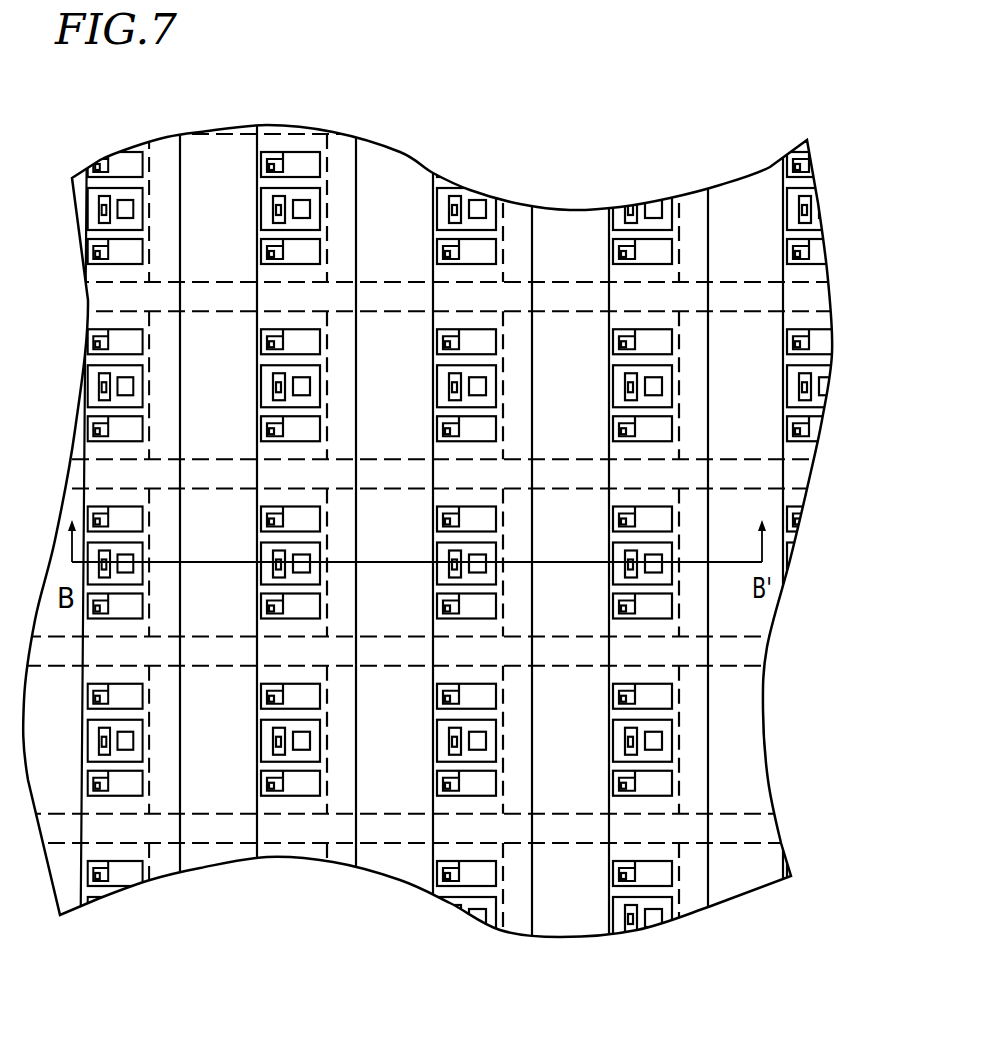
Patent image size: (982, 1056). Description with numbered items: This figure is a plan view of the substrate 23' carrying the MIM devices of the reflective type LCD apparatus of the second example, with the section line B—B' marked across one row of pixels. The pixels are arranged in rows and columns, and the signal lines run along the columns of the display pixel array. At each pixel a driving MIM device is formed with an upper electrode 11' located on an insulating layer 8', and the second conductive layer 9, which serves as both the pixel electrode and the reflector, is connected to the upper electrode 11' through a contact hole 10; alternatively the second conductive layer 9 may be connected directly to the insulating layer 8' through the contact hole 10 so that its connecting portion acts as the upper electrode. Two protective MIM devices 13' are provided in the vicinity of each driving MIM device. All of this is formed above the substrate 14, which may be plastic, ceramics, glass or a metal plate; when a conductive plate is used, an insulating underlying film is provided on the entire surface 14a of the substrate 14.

The insulating layer 8' is at (436, 531).
The substrate 23' is at (491, 523).
The substrate 14 is at (67, 511).
The entire surface of the substrate 14a is at (340, 150).
The second conductive layer 9 is at (233, 127).
The storage capacitor electrode 13' is at (437, 503).
The upper electrode 11' is at (467, 524).
The contact hole 10 is at (653, 926).